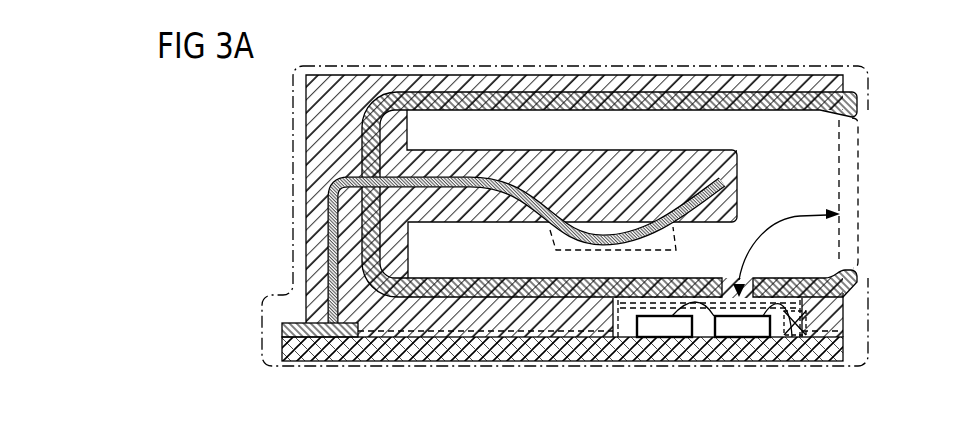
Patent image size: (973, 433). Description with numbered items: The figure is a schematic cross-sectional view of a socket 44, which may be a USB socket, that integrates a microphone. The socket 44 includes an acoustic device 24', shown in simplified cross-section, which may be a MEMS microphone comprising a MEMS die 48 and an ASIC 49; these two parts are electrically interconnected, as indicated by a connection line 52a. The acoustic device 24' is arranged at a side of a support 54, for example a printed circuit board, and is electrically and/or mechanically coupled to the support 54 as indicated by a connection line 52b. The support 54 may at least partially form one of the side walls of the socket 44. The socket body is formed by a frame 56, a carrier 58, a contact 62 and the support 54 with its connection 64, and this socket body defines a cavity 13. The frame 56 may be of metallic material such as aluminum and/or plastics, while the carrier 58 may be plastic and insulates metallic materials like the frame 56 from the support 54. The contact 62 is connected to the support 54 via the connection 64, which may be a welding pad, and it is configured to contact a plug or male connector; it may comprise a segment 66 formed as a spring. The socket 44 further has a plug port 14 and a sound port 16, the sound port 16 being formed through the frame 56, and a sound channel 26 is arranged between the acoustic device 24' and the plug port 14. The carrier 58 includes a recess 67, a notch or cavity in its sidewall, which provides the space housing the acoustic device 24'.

The cavity 13 is at (462, 118).
The plug port 14 is at (850, 197).
The sound port 16 is at (737, 280).
The acoustic device 24' is at (776, 359).
The sound channel 26 is at (802, 213).
The socket 44 is at (870, 141).
The MEMS die 48 is at (742, 328).
The ASIC 49 is at (658, 328).
The connection line 52a is at (706, 304).
The connection line 52b is at (788, 310).
The support 54 is at (418, 350).
The frame 56 is at (765, 100).
The carrier 58 is at (317, 136).
The contact 62 is at (328, 236).
The connection 64 is at (282, 332).
The segment 66 is at (550, 236).
The recess 67 is at (802, 318).